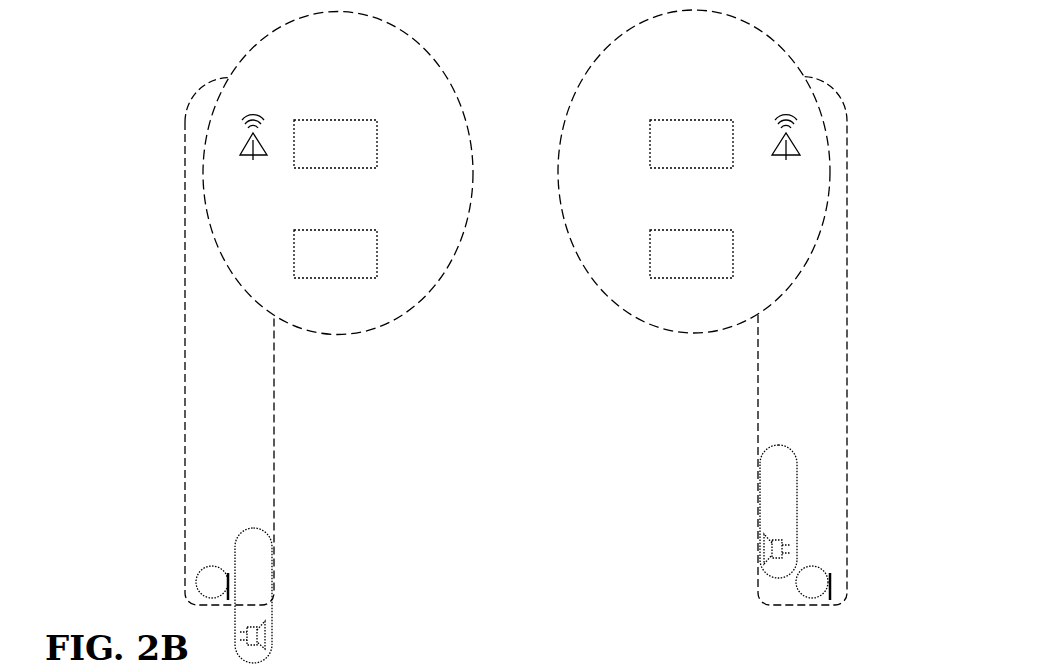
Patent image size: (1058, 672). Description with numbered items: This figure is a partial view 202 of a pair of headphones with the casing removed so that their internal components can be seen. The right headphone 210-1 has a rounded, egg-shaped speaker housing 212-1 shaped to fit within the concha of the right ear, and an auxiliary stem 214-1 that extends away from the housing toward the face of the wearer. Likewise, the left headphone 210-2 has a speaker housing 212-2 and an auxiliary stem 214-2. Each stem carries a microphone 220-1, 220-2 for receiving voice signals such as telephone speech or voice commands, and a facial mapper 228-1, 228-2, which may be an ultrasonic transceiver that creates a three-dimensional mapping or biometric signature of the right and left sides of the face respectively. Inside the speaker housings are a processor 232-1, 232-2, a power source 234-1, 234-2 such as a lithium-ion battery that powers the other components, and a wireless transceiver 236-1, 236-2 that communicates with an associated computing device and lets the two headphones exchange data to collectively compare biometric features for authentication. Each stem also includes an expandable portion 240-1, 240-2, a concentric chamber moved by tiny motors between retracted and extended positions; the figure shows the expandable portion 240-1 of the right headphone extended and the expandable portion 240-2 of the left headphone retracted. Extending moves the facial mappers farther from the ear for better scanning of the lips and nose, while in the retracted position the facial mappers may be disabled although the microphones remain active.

The partial view 202 is at (547, 559).
The right headphone 210-1 is at (348, 368).
The left headphone 210-2 is at (690, 362).
The speaker housing 212-1 is at (247, 64).
The speaker housing 212-2 is at (786, 55).
The auxiliary stem 214-1 is at (193, 292).
The auxiliary stem 214-2 is at (832, 237).
The microphone 220-1 is at (200, 577).
The microphone 220-2 is at (814, 582).
The facial mapper 228-1 is at (262, 632).
The facial mapper 228-2 is at (772, 541).
The processor 232-1 is at (335, 144).
The processor 232-2 is at (691, 144).
The power source 234-1 is at (335, 254).
The power source 234-2 is at (691, 254).
The wireless transceiver 236-1 is at (253, 160).
The wireless transceiver 236-2 is at (786, 160).
The expandable portion 240-1 is at (258, 552).
The expandable portion 240-2 is at (771, 490).